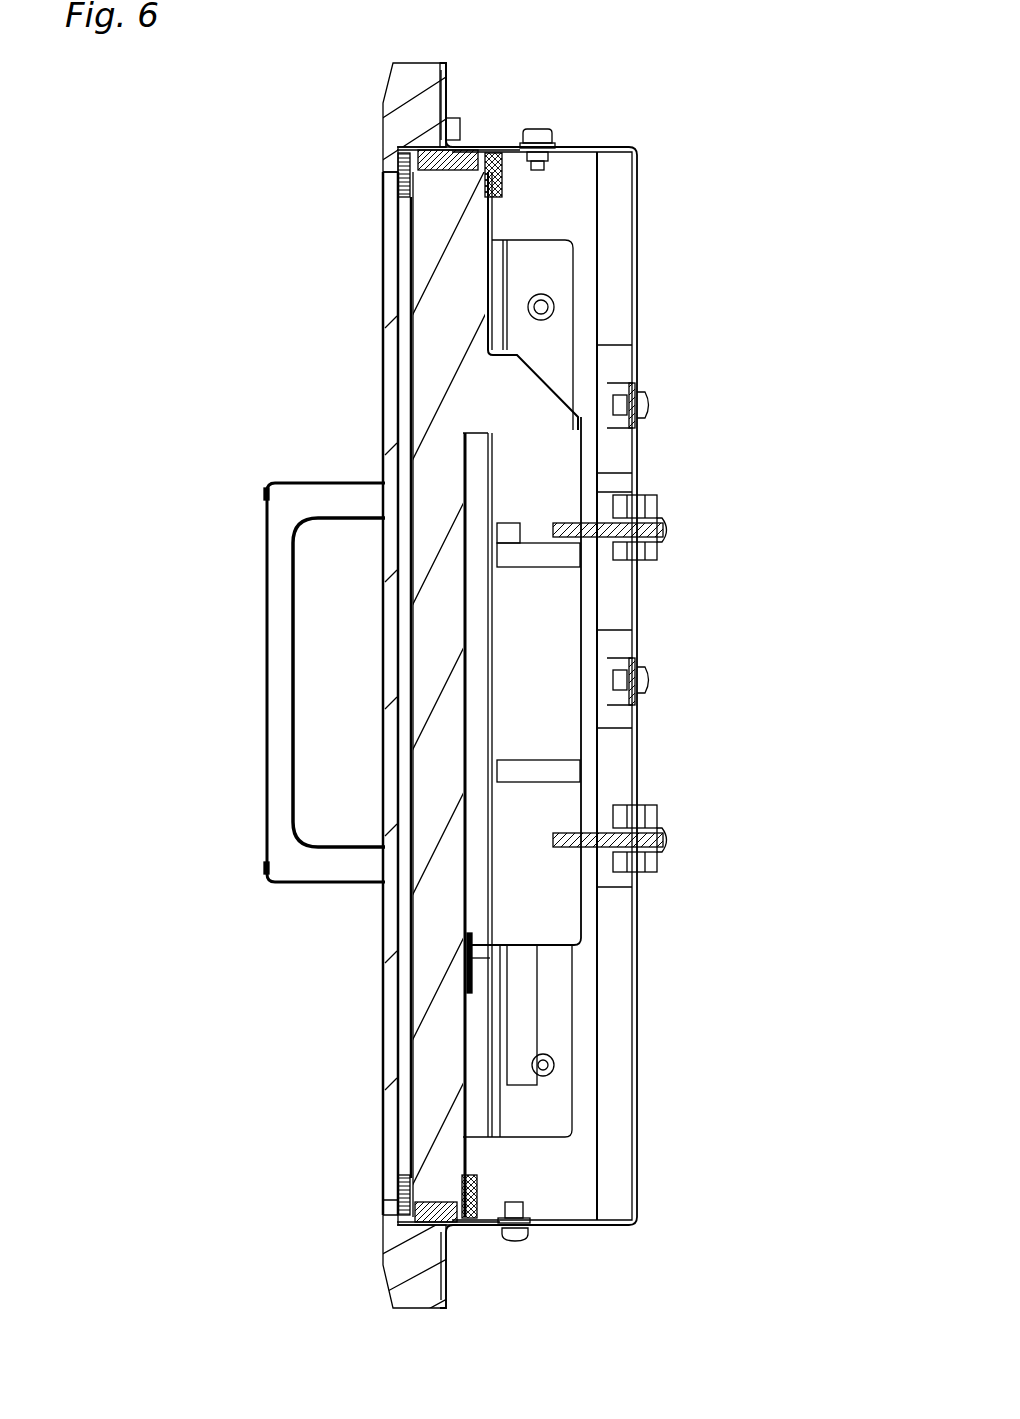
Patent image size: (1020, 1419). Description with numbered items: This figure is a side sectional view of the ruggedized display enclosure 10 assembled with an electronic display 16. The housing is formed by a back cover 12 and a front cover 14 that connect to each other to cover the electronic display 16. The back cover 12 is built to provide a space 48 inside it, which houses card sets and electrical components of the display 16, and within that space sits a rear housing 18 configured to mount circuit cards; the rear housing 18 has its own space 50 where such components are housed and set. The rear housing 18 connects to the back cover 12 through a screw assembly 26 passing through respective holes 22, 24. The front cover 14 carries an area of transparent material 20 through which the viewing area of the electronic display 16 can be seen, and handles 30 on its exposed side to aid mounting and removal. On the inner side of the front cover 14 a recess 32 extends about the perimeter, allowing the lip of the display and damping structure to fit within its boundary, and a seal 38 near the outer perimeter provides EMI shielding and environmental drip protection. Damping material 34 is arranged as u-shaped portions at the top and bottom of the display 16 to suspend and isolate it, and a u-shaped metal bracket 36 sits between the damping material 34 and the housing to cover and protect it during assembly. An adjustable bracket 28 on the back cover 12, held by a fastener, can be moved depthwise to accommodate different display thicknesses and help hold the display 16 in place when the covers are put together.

The ruggedized display enclosure 10 is at (260, 164).
The back cover 12 is at (634, 332).
The front cover 14 is at (386, 290).
The electronic display 16 is at (432, 978).
The rear housing 18 is at (548, 385).
The area of transparent material 20 is at (390, 633).
The hole 22 is at (637, 507).
The hole 24 is at (587, 548).
The screw assembly 26 is at (658, 520).
The adjustable bracket 28 is at (524, 182).
The handle 30 is at (267, 550).
The recess 32 is at (398, 142).
The damping material 34 is at (472, 146).
The bracket 36 is at (400, 180).
The seal 38 is at (445, 67).
The space 48 is at (576, 197).
The space 50 is at (540, 614).